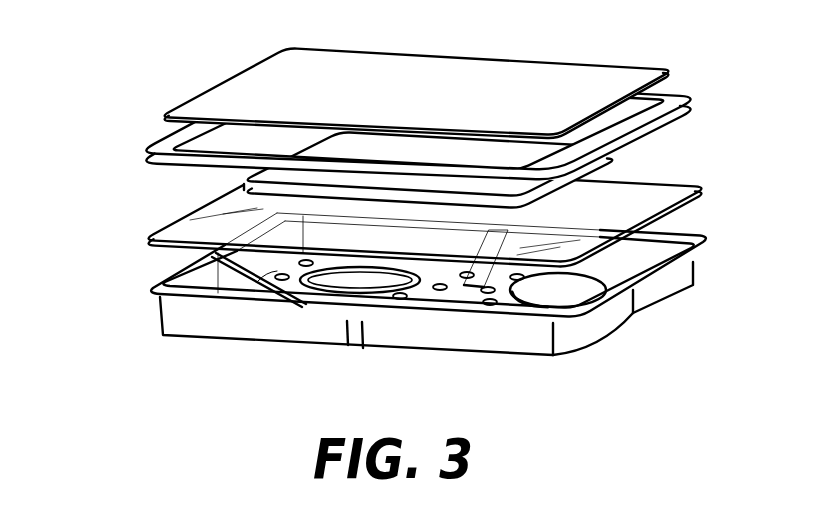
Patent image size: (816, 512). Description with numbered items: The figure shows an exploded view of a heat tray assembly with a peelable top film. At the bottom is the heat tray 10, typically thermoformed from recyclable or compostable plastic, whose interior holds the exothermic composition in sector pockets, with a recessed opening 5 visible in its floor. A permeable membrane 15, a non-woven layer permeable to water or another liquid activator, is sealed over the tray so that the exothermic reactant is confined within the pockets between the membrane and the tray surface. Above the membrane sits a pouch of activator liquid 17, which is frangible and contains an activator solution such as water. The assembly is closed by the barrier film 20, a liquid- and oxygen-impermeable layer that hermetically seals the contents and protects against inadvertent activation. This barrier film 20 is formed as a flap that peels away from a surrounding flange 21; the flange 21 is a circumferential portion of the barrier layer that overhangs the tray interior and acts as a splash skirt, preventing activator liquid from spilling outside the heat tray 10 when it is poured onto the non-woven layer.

The opening 5 is at (577, 288).
The heat tray 10 is at (312, 366).
The permeable membrane 15 is at (157, 222).
The pouch of activator liquid 17 is at (160, 248).
The barrier film 20 is at (590, 70).
The flange 21 is at (650, 128).